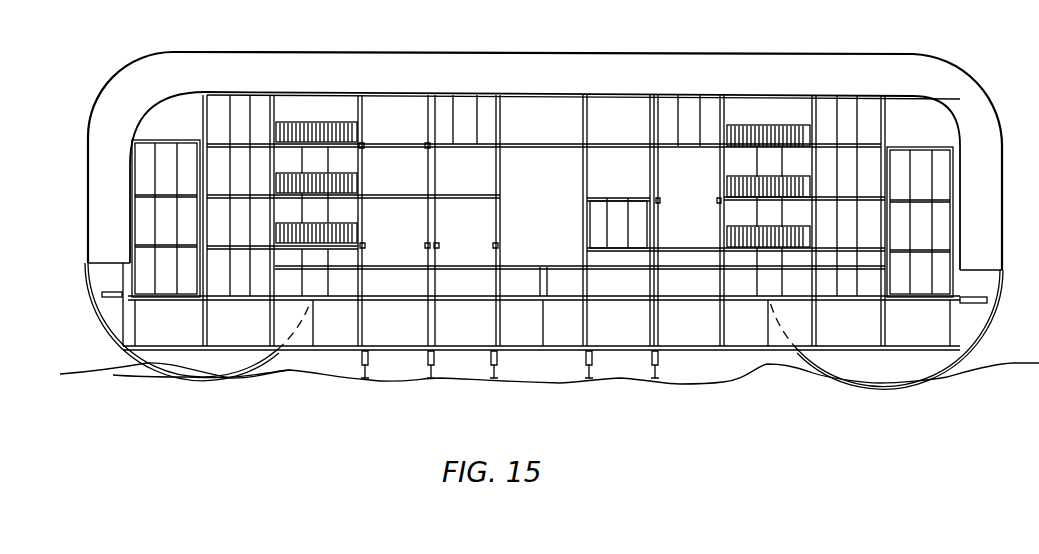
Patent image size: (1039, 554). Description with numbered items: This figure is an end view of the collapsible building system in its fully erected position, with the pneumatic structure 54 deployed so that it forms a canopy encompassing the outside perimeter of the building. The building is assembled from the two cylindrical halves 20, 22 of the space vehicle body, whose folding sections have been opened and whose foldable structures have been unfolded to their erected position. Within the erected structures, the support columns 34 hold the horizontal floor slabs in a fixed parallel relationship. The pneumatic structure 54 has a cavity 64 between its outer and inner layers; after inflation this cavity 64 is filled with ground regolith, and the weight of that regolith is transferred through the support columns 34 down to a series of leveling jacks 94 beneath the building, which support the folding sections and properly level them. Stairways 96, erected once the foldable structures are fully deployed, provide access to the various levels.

The cylindrical half 20 is at (913, 386).
The cylindrical half 22 is at (110, 370).
The support column 34 is at (205, 115).
The pneumatic structure 54 is at (972, 82).
The cavity 64 is at (520, 70).
The leveling jacks 94 is at (362, 365).
The stairways 96 is at (287, 126).